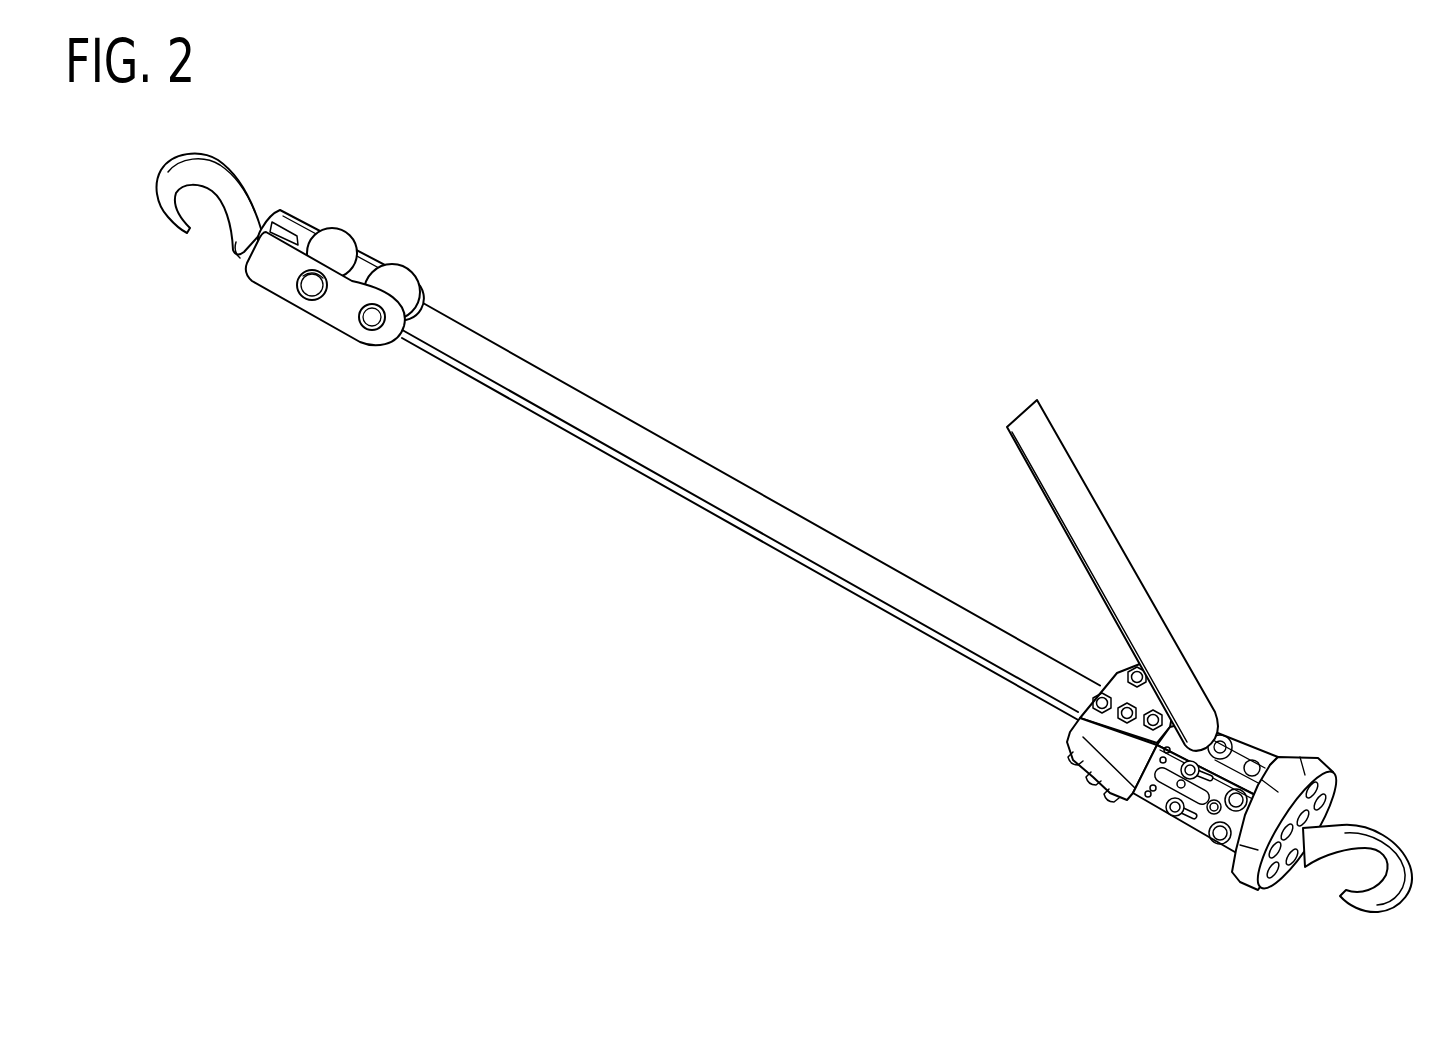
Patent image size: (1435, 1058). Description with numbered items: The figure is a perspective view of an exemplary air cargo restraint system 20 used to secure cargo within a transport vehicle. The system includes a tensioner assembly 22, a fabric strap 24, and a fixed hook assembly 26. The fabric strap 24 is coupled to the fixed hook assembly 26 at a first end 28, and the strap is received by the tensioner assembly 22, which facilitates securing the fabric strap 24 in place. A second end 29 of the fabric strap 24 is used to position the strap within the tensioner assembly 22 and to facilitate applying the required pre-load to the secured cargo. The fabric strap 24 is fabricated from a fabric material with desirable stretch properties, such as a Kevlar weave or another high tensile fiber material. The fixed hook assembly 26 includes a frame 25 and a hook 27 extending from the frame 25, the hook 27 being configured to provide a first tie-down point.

The air cargo restraint system 20 is at (583, 548).
The tensioner assembly 22 is at (1243, 740).
The fabric strap 24 is at (702, 472).
The frame 25 is at (343, 327).
The fixed hook assembly 26 is at (372, 232).
The hook 27 is at (228, 181).
The first end 28 is at (423, 293).
The second end 29 is at (1010, 417).